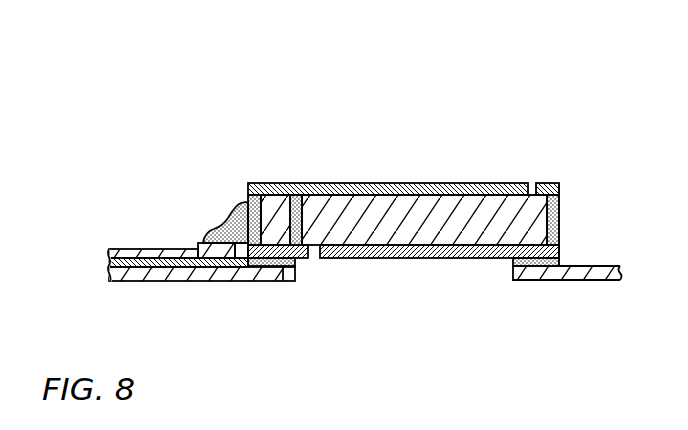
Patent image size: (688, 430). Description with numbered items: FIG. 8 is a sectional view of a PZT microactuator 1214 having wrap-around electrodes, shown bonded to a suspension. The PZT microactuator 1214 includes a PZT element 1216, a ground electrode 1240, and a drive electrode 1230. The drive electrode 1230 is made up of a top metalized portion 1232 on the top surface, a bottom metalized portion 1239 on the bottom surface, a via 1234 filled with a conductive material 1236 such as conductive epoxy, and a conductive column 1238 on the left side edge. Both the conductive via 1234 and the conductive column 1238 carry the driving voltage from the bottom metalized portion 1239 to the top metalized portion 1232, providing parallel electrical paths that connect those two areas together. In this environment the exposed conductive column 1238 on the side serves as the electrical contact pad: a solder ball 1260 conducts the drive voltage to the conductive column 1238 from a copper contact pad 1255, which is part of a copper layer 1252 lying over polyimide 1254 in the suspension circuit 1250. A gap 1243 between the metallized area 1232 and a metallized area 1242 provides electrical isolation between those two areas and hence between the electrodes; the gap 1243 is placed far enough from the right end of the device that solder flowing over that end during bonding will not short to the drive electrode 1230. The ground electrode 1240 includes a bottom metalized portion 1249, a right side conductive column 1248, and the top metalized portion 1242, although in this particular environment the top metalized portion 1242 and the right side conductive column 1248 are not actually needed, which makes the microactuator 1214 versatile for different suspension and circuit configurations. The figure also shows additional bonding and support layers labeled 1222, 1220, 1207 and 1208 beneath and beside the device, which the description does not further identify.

The PZT microactuator 1214 is at (457, 115).
The drive electrode 1230 is at (404, 150).
The top metalized portion 1232 is at (274, 183).
The top metalized portion 1242 is at (543, 183).
The gap 1243 is at (532, 183).
The ground electrode 1240 is at (558, 180).
The conductive column 1238 is at (250, 197).
The conductive material 1236 is at (302, 210).
The conductive via 1234 is at (296, 230).
The PZT element 1216 is at (465, 215).
The right side conductive column 1248 is at (560, 213).
The bottom metalized portion 1249 is at (462, 259).
The left bonding strip 1222 is at (268, 259).
The right bonding strip 1220 is at (561, 260).
The right substrate 1207 is at (565, 280).
The suspension circuit 1250 is at (137, 244).
The copper contact pad 1255 is at (198, 244).
The solder ball 1260 is at (226, 211).
The copper layer 1252 is at (118, 248).
The left substrate 1208 is at (173, 281).
The bottom metalized portion 1239 is at (291, 259).
The polyimide 1254 is at (108, 266).